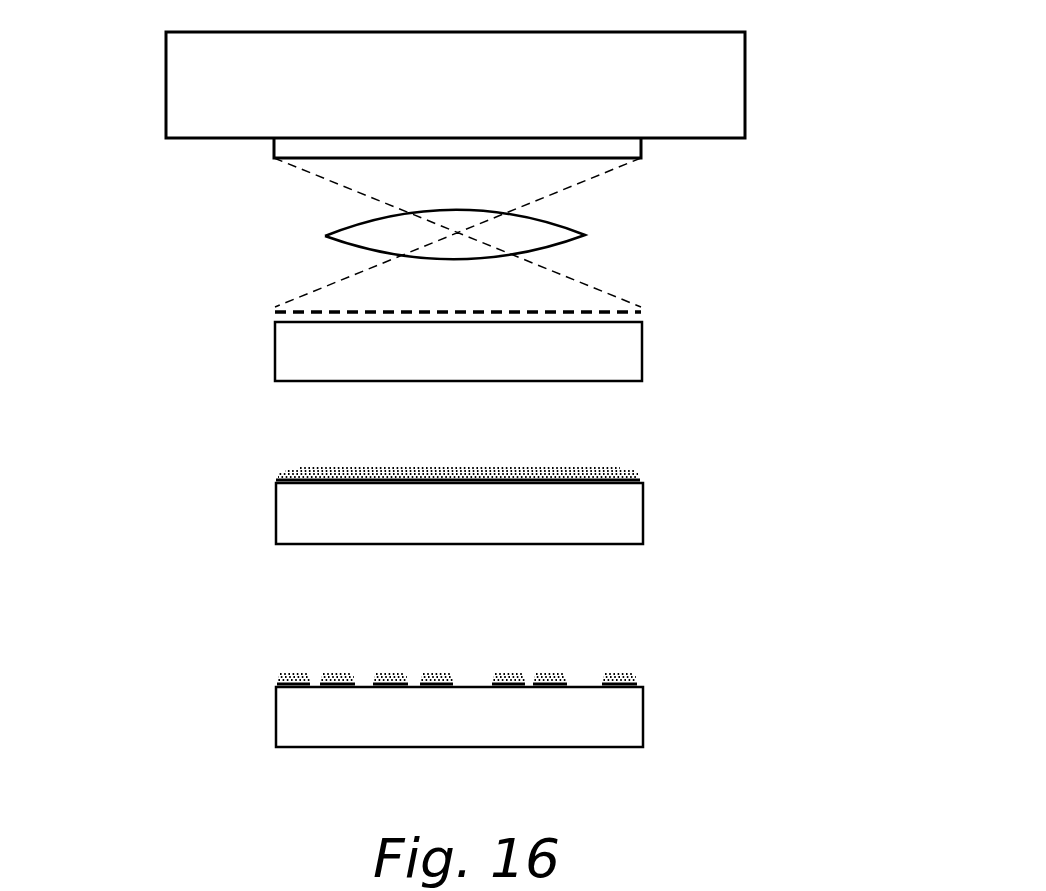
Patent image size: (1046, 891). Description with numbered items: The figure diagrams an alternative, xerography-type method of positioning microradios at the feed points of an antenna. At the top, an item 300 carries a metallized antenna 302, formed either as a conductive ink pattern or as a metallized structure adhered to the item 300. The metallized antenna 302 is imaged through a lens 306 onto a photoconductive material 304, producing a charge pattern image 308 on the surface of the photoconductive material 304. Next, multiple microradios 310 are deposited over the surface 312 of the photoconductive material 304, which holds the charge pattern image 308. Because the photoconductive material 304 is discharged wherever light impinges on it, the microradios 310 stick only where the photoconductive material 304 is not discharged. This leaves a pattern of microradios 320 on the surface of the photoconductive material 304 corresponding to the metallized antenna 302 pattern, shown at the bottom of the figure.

The item 300 is at (470, 92).
The metallized antenna 302 is at (623, 147).
The photoconductive material 304 is at (295, 724).
The lens 306 is at (373, 238).
The charge pattern image 308 is at (620, 313).
The multiple microradios 310 is at (327, 468).
The surface 312 is at (580, 477).
The pattern of microradios 320 is at (385, 675).